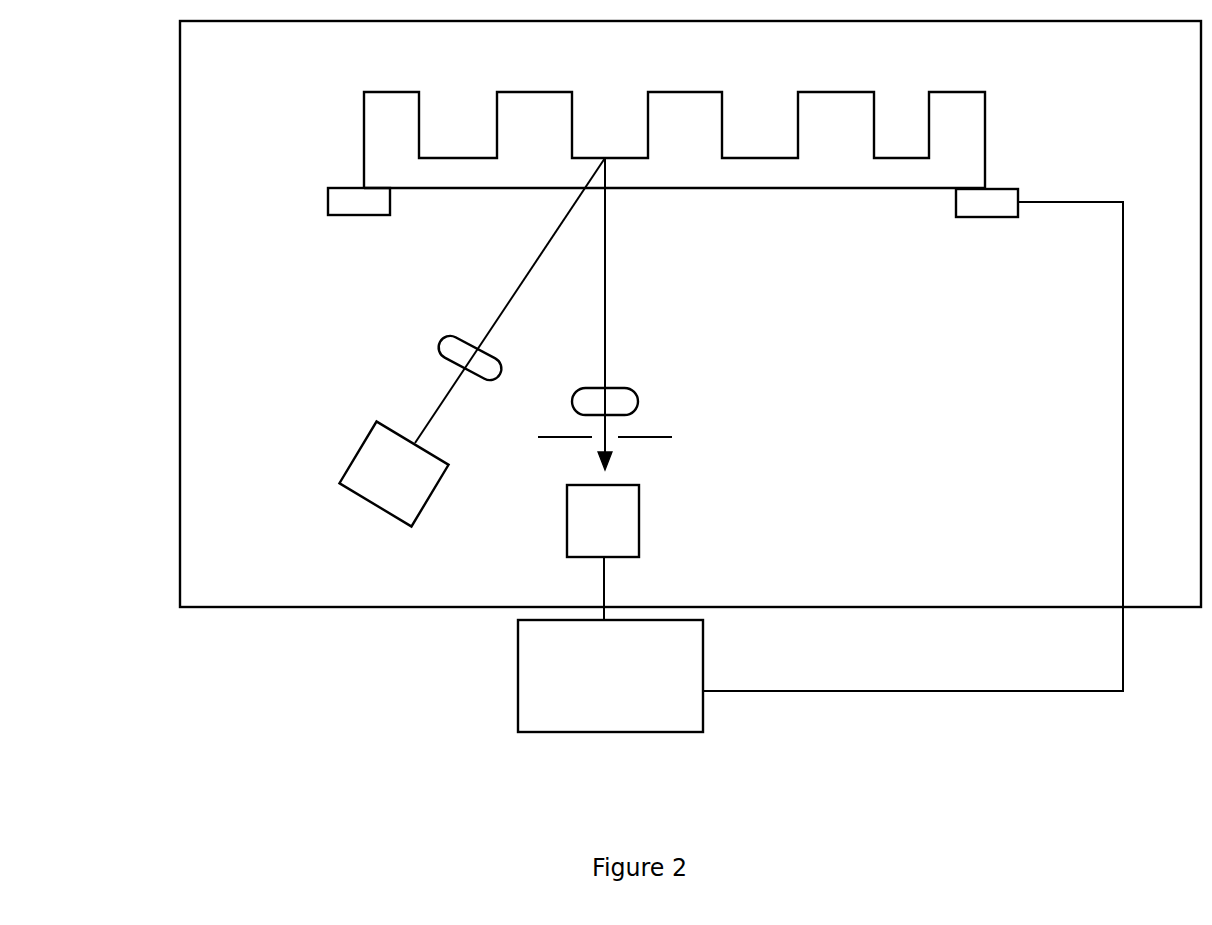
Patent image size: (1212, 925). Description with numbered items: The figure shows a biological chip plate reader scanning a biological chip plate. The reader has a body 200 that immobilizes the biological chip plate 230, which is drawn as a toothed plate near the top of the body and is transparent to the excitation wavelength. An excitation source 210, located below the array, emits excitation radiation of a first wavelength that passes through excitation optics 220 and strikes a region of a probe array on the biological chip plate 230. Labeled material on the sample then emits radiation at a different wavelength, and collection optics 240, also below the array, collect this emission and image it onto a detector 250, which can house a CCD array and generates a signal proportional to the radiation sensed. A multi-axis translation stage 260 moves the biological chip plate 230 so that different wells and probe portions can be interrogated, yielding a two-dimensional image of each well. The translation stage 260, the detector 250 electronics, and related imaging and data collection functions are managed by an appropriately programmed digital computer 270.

The body 200 is at (167, 397).
The excitation source 210 is at (332, 464).
The excitation optics 220 is at (421, 343).
The biological chip plate 230 is at (993, 111).
The collection optics 240 is at (652, 397).
The detector 250 is at (660, 531).
The multi-axis translation stage 260 is at (325, 203).
The digital computer 270 is at (510, 675).